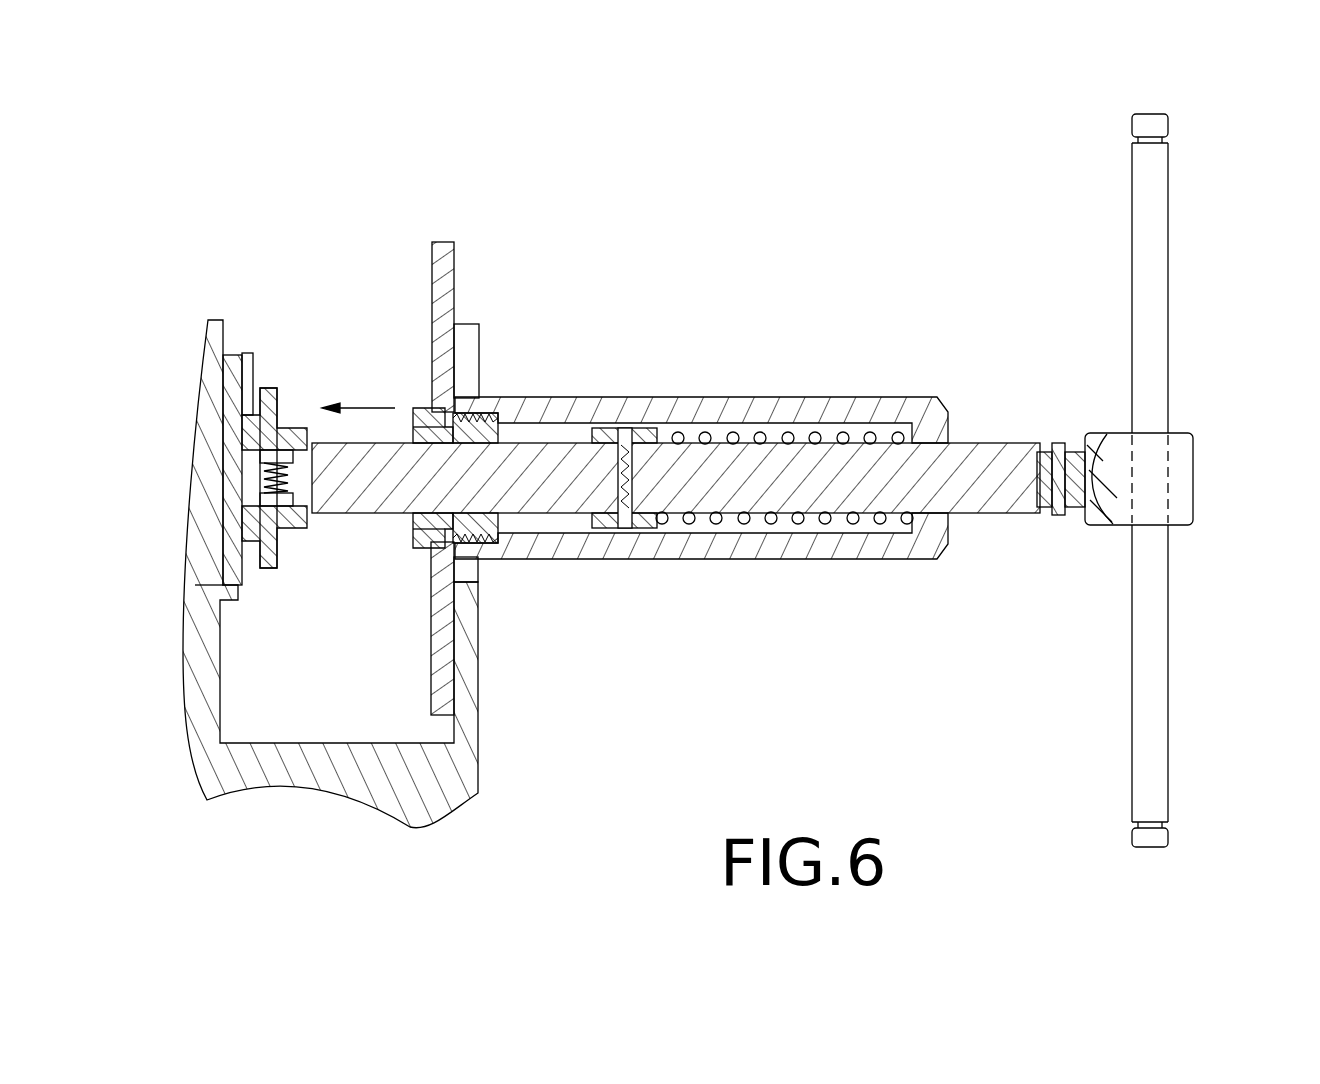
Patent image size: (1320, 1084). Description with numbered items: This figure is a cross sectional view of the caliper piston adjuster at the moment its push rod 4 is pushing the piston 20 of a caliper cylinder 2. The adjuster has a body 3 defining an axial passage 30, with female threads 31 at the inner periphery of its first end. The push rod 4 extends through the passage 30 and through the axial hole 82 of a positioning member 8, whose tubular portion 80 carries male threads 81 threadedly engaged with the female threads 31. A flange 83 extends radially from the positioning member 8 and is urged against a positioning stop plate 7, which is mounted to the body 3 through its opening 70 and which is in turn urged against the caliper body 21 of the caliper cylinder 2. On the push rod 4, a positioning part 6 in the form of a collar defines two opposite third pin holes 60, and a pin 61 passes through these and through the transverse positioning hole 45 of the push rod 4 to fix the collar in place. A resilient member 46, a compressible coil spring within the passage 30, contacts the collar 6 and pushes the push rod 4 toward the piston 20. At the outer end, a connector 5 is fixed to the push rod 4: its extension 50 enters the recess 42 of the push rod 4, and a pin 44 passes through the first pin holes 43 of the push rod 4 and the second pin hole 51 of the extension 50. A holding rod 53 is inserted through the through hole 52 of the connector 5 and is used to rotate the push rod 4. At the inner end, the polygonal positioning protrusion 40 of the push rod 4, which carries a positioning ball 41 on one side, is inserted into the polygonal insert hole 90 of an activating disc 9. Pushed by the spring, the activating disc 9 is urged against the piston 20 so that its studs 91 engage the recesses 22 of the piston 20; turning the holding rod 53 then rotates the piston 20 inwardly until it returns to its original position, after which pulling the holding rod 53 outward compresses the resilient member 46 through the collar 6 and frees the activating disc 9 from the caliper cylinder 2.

The caliper cylinder 2 is at (343, 788).
The piston 20 is at (233, 353).
The caliper body 21 is at (466, 702).
The recesses 22 is at (249, 392).
The body 3 is at (770, 398).
The passage 30 is at (724, 432).
The female threads 31 is at (469, 400).
The push rod 4 is at (326, 515).
The positioning protrusion 40 is at (262, 481).
The positioning ball 41 is at (258, 459).
The recess 42 is at (1045, 455).
The first pin holes 43 is at (1071, 514).
The pin 44 is at (1057, 450).
The positioning hole 45 is at (653, 437).
The resilient member 46 is at (818, 434).
The connector 5 is at (1195, 505).
The extension 50 is at (1093, 438).
The second pin hole 51 is at (1050, 512).
The through hole 52 is at (1195, 462).
The holding rod 53 is at (1170, 278).
The positioning part 6 is at (632, 528).
The third pin holes 60 is at (608, 440).
The pin 61 is at (622, 528).
The positioning stop plate 7 is at (445, 240).
The opening 70 is at (433, 410).
The positioning member 8 is at (433, 558).
The tubular portion 80 is at (494, 548).
The male threads 81 is at (414, 522).
The axial hole 82 is at (492, 410).
The flange 83 is at (428, 406).
The activating disc 9 is at (282, 412).
The polygonal insert hole 90 is at (299, 437).
The studs 91 is at (247, 428).